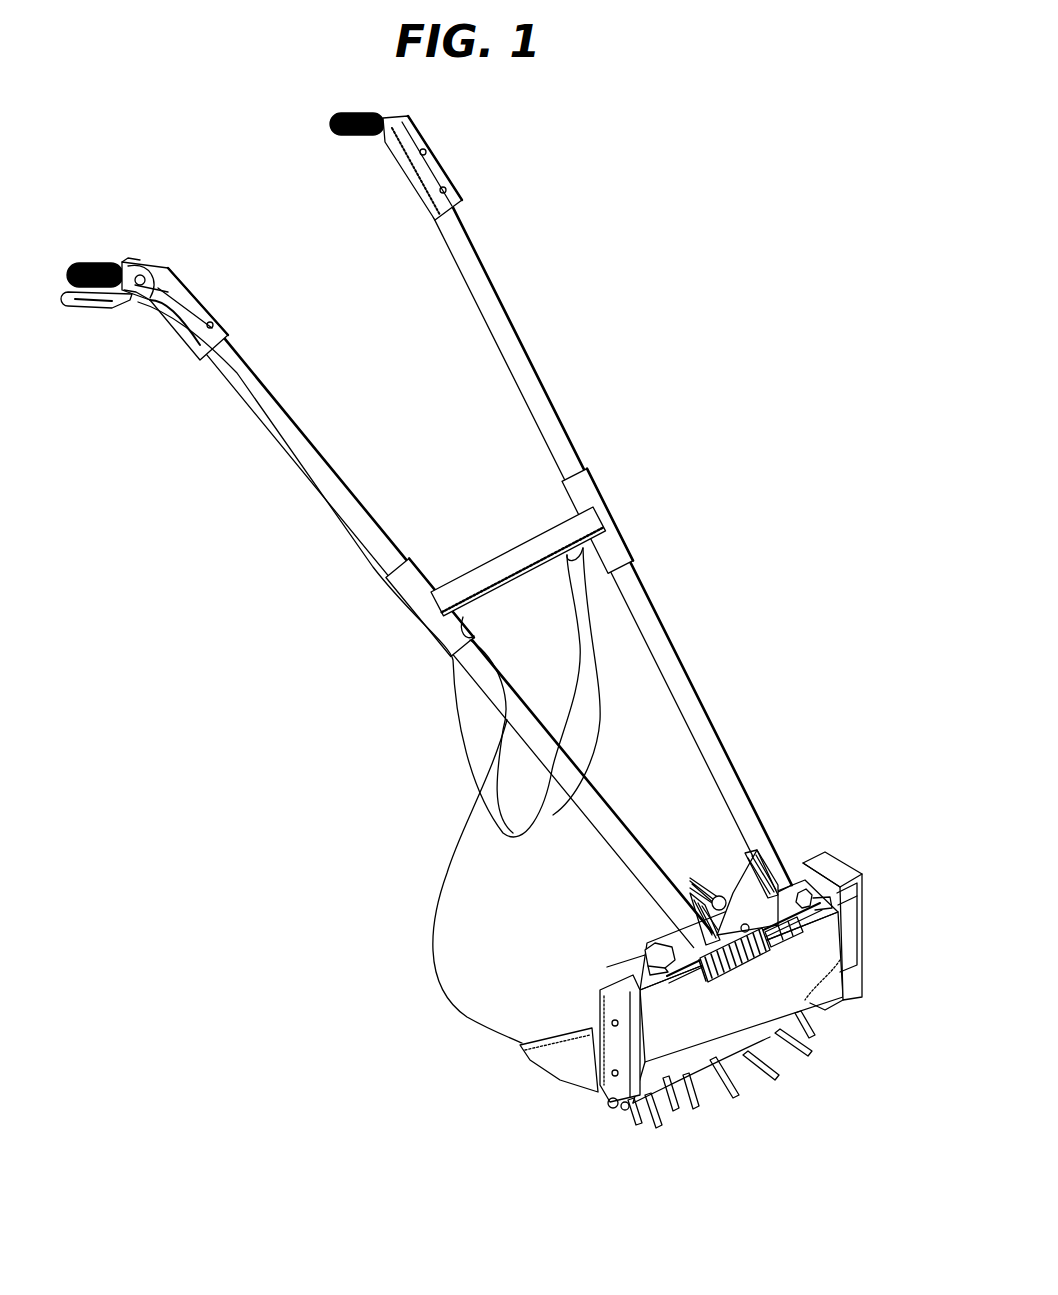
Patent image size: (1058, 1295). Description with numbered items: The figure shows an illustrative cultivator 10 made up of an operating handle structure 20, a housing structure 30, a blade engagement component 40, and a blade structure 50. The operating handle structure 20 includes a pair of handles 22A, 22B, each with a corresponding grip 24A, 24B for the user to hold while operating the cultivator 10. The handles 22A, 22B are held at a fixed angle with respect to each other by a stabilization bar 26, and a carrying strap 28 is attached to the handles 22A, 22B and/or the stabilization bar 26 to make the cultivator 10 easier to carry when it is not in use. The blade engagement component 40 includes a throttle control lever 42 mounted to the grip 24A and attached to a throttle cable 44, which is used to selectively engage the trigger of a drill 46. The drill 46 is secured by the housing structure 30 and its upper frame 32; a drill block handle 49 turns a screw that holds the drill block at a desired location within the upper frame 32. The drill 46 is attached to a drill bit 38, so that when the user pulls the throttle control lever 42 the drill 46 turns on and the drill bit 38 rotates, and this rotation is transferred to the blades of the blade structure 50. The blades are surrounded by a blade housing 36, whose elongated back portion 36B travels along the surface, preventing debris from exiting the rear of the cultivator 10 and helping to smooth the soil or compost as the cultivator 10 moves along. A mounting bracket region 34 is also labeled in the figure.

The cultivator 10 is at (756, 262).
The operating handle structure 20 is at (256, 678).
The handle 22A is at (317, 453).
The handle 22B is at (470, 283).
The grip 24A is at (100, 266).
The grip 24B is at (362, 135).
The stabilization bar 26 is at (520, 553).
The carrying strap 28 is at (470, 718).
The housing structure 30 is at (884, 829).
The upper frame 32 is at (627, 980).
The mounting bracket 34 is at (704, 850).
The blade housing 36 is at (862, 963).
The elongated back portion 36B is at (540, 1060).
The drill bit 38 is at (806, 897).
The blade engagement component 40 is at (408, 1023).
The throttle control lever 42 is at (73, 305).
The throttle cable 44 is at (443, 880).
The drill 46 is at (717, 973).
The drill block handle 49 is at (652, 973).
The blade structure 50 is at (837, 1084).